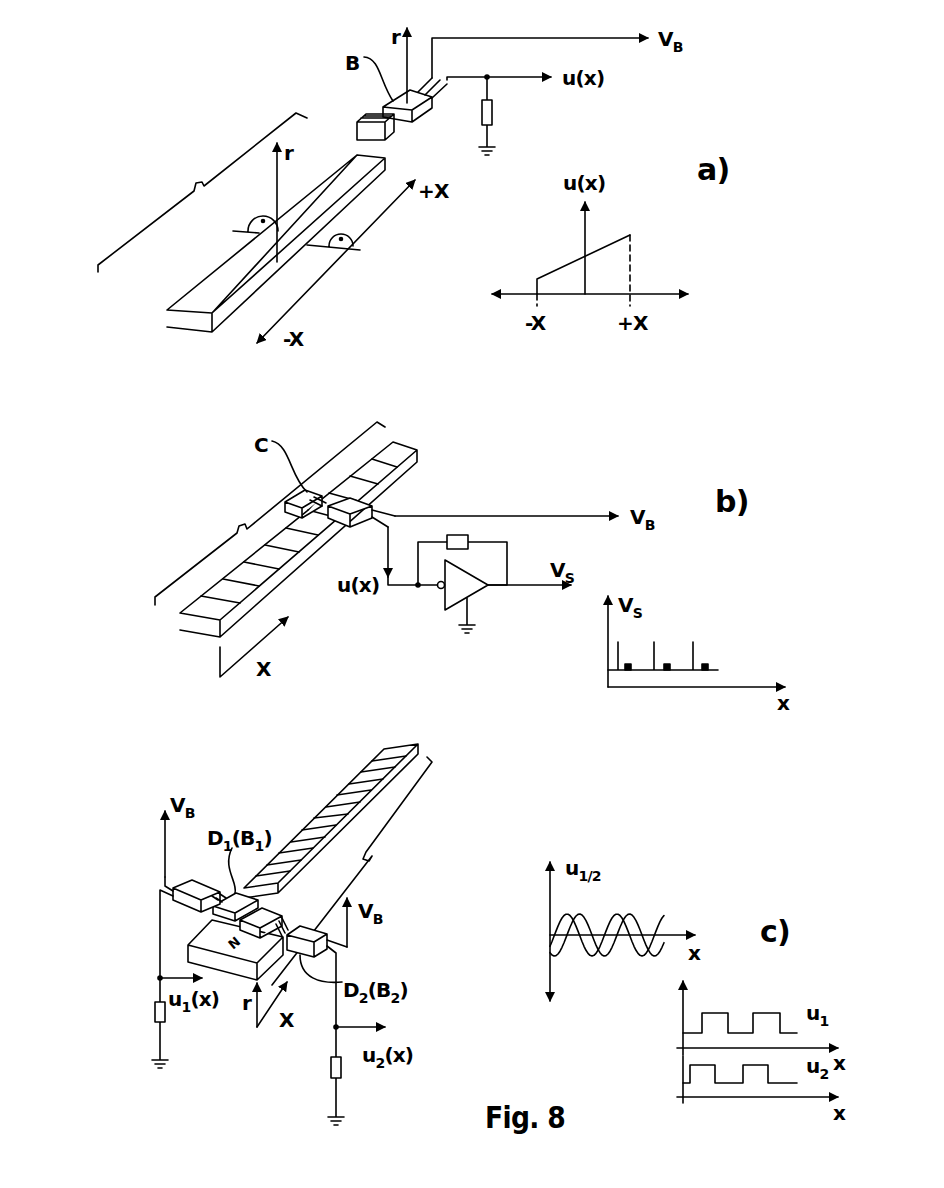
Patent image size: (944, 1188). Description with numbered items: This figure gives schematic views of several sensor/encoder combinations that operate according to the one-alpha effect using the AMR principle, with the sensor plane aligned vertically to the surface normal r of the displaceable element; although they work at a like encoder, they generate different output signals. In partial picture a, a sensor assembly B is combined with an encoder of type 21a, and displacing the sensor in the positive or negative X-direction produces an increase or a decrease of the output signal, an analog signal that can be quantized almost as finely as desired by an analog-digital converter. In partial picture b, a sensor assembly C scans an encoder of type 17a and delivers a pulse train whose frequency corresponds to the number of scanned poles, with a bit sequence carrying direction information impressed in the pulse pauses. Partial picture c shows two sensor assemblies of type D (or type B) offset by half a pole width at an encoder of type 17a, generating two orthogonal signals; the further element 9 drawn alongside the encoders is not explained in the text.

The measuring path (track) of the sensor arrangement 9 is at (265, 549).
The encoder of type 21a is at (244, 257).
The encoder of type 17a is at (212, 595).